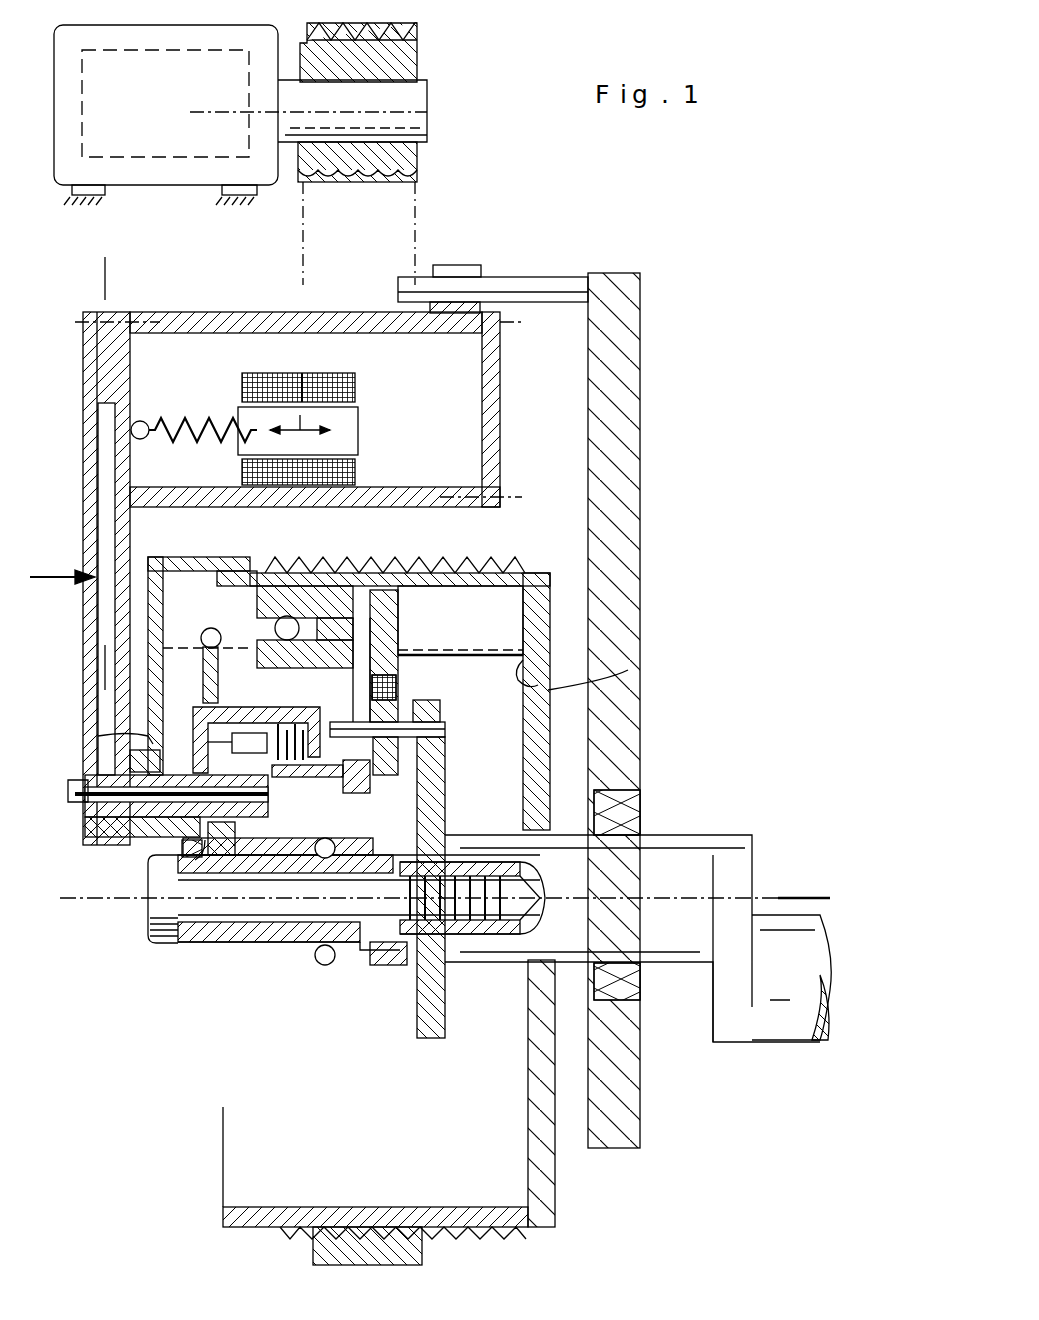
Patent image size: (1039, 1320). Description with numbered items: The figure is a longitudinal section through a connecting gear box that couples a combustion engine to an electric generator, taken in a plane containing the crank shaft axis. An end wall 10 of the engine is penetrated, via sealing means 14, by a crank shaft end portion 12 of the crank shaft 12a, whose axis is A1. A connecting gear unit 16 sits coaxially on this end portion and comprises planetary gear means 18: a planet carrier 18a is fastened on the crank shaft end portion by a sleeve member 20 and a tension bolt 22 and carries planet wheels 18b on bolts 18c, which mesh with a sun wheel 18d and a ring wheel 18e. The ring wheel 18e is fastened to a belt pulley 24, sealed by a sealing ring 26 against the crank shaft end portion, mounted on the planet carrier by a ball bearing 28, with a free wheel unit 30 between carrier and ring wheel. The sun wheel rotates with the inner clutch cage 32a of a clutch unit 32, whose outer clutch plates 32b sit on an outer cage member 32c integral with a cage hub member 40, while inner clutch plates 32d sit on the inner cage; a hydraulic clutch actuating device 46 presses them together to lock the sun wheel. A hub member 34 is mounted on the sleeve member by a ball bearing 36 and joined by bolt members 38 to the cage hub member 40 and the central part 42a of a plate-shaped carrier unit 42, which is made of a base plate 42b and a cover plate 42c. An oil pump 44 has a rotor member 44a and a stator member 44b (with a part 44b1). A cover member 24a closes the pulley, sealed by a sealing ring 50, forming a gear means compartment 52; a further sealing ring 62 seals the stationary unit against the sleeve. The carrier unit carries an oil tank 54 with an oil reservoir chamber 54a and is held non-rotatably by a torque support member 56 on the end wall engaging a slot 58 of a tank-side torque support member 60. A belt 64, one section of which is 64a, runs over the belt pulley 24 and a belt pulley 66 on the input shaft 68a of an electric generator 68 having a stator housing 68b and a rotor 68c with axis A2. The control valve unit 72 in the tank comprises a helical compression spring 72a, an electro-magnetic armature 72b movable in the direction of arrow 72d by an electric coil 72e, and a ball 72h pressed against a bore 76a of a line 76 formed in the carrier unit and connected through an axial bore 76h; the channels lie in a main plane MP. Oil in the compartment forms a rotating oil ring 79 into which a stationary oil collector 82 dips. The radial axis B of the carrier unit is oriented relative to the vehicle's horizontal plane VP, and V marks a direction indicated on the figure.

The end wall 10 is at (622, 483).
The crank shaft end portion 12 is at (692, 840).
The crank shaft 12a is at (787, 1045).
The sealing means 14 is at (632, 818).
The connecting gear unit 16 is at (557, 1185).
The planetary gear means 18 is at (452, 792).
The planet carrier 18a is at (429, 713).
The planet wheels 18b is at (400, 665).
The bolts 18c is at (441, 729).
The sun wheel 18d is at (447, 830).
The ring wheel 18e is at (404, 607).
The sleeve member 20 is at (270, 947).
The tension bolt 22 is at (365, 942).
The belt pulley 24 is at (512, 578).
The cover member 24a is at (150, 576).
The sealing ring 26 is at (535, 842).
The ball bearing 28 is at (290, 580).
The free wheel unit 30 is at (312, 585).
The clutch unit 32 is at (372, 653).
The inner clutch cage 32a is at (272, 772).
The outer clutch plates 32b is at (320, 665).
The outer cage member 32c is at (287, 615).
The inner clutch plates 32d is at (404, 752).
The hub member 34 is at (305, 915).
The ball bearing 36 is at (323, 962).
The bolt members 38 is at (85, 793).
The cage hub member 40 is at (177, 770).
The carrier unit 42 is at (85, 455).
The central part 42a is at (90, 840).
The base plate 42b is at (122, 538).
The cover plate 42c is at (90, 460).
The oil pump 44 is at (240, 915).
The rotor member 44a is at (200, 920).
The stator member 44b is at (202, 632).
The pin end 44b1 is at (150, 865).
The clutch actuating device 46 is at (261, 655).
The sealing ring 50 is at (152, 768).
The gear means compartment 52 is at (542, 592).
The oil tank 54 is at (495, 440).
The oil reservoir chamber 54a is at (466, 401).
The torque support member 56 is at (544, 287).
The slot 58 is at (464, 265).
The tank-side torque support member 60 is at (445, 307).
The sealing ring 62 is at (163, 930).
The belt 64 is at (427, 1237).
The belt section 64a is at (408, 209).
The belt pulley 66 is at (422, 51).
The electric generator 68 is at (278, 195).
The input shaft 68a is at (422, 130).
The stator housing 68b is at (150, 173).
The rotor 68c is at (192, 170).
The control valve unit 72 is at (360, 400).
The helical compression spring 72a is at (205, 425).
The electro-magnetic armature 72b is at (357, 442).
The arrow 72d is at (310, 390).
The electric coil 72e is at (310, 392).
The ball 72h is at (140, 420).
The line 76 is at (103, 607).
The bore 76a is at (102, 423).
The axial bore 76h is at (117, 754).
The rotating oil ring 79 is at (622, 670).
The oil collector 82 is at (215, 648).
The axis A1 is at (625, 900).
The axis A2 is at (220, 110).
The radial axis B is at (102, 274).
The main plane MP is at (106, 665).
The direction V is at (54, 573).
The horizontal plane VP is at (790, 890).